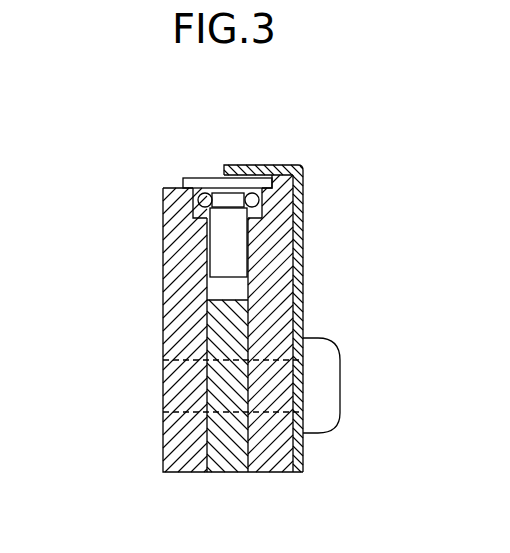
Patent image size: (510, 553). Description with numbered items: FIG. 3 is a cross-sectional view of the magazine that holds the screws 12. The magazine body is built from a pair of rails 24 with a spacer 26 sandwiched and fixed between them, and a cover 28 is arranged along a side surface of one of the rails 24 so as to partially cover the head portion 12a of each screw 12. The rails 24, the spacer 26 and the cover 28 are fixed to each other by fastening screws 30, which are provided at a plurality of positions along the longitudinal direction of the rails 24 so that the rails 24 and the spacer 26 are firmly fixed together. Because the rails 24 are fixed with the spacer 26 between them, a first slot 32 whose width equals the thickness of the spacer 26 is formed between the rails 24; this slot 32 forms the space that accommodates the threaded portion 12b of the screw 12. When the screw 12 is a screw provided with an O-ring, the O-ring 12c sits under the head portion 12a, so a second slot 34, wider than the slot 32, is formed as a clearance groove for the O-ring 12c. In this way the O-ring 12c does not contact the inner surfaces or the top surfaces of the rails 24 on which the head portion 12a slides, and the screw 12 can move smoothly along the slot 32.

The screw 12 is at (167, 203).
The head portion 12a is at (210, 178).
The threaded portion 12b is at (225, 255).
The O-ring 12c is at (183, 185).
The rail 24 is at (183, 328).
The spacer 26 is at (228, 472).
The cover 28 is at (263, 165).
The fastening screw 30 is at (322, 385).
The slot 32 is at (235, 287).
The slot 34 is at (206, 234).